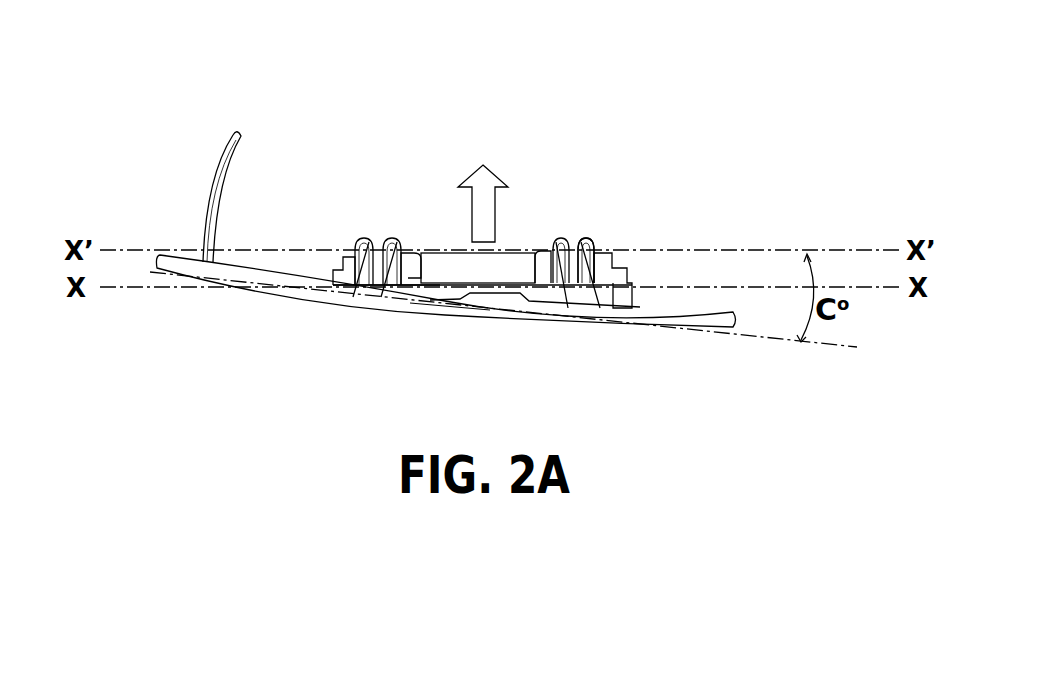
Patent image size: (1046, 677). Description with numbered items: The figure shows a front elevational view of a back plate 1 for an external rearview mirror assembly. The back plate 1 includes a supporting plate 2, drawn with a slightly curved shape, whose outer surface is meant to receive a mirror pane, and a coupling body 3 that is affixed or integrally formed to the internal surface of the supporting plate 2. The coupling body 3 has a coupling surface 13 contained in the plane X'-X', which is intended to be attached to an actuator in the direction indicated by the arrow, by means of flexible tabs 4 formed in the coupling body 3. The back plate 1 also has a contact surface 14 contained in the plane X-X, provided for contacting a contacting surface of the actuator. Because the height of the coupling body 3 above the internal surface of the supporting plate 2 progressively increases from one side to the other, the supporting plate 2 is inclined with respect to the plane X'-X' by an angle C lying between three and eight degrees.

The back plate 1 is at (328, 130).
The supporting plate 2 is at (727, 315).
The coupling body 3 is at (602, 252).
The flexible tabs 4 is at (580, 225).
The coupling surface 13 is at (513, 253).
The contact surface 14 is at (442, 285).